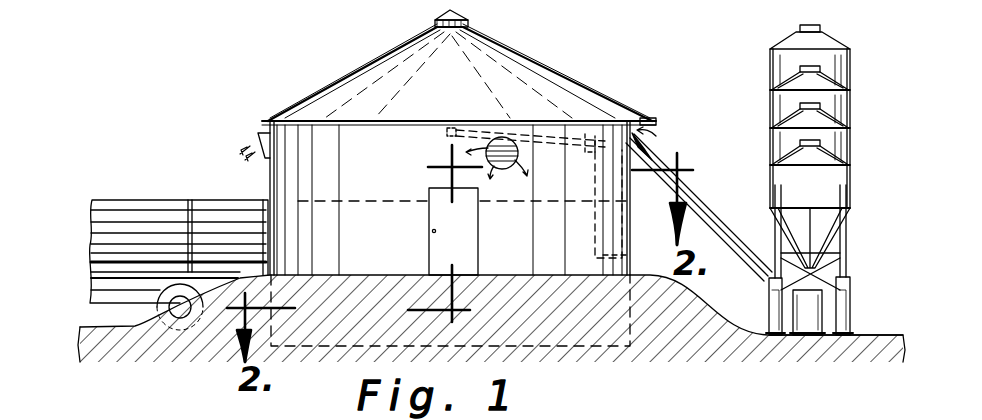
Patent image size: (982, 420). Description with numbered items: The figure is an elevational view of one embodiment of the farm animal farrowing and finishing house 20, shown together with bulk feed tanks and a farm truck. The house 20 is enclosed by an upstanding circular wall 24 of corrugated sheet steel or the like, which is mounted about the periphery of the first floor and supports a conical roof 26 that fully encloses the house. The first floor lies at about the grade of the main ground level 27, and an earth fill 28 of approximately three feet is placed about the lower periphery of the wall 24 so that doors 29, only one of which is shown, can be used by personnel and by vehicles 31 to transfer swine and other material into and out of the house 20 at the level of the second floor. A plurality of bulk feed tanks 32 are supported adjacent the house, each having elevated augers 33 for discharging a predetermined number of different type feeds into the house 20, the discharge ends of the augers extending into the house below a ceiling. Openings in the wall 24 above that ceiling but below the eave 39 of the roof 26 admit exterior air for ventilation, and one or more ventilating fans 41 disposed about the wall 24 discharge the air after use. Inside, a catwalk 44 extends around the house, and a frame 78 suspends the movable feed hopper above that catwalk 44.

The farrowing and finishing house 20 is at (424, 142).
The upstanding circular wall 24 is at (268, 178).
The conical roof 26 is at (590, 95).
The main ground level 27 is at (863, 335).
The earth fill 28 is at (682, 299).
The doors 29 is at (428, 228).
The vehicles 31 is at (111, 183).
The bulk feed tanks 32 is at (865, 73).
The elevated augers 33 is at (715, 199).
The eave 39 is at (266, 121).
The ventilating fans 41 is at (258, 131).
The catwalk 44 is at (633, 260).
The frame 78 is at (545, 130).